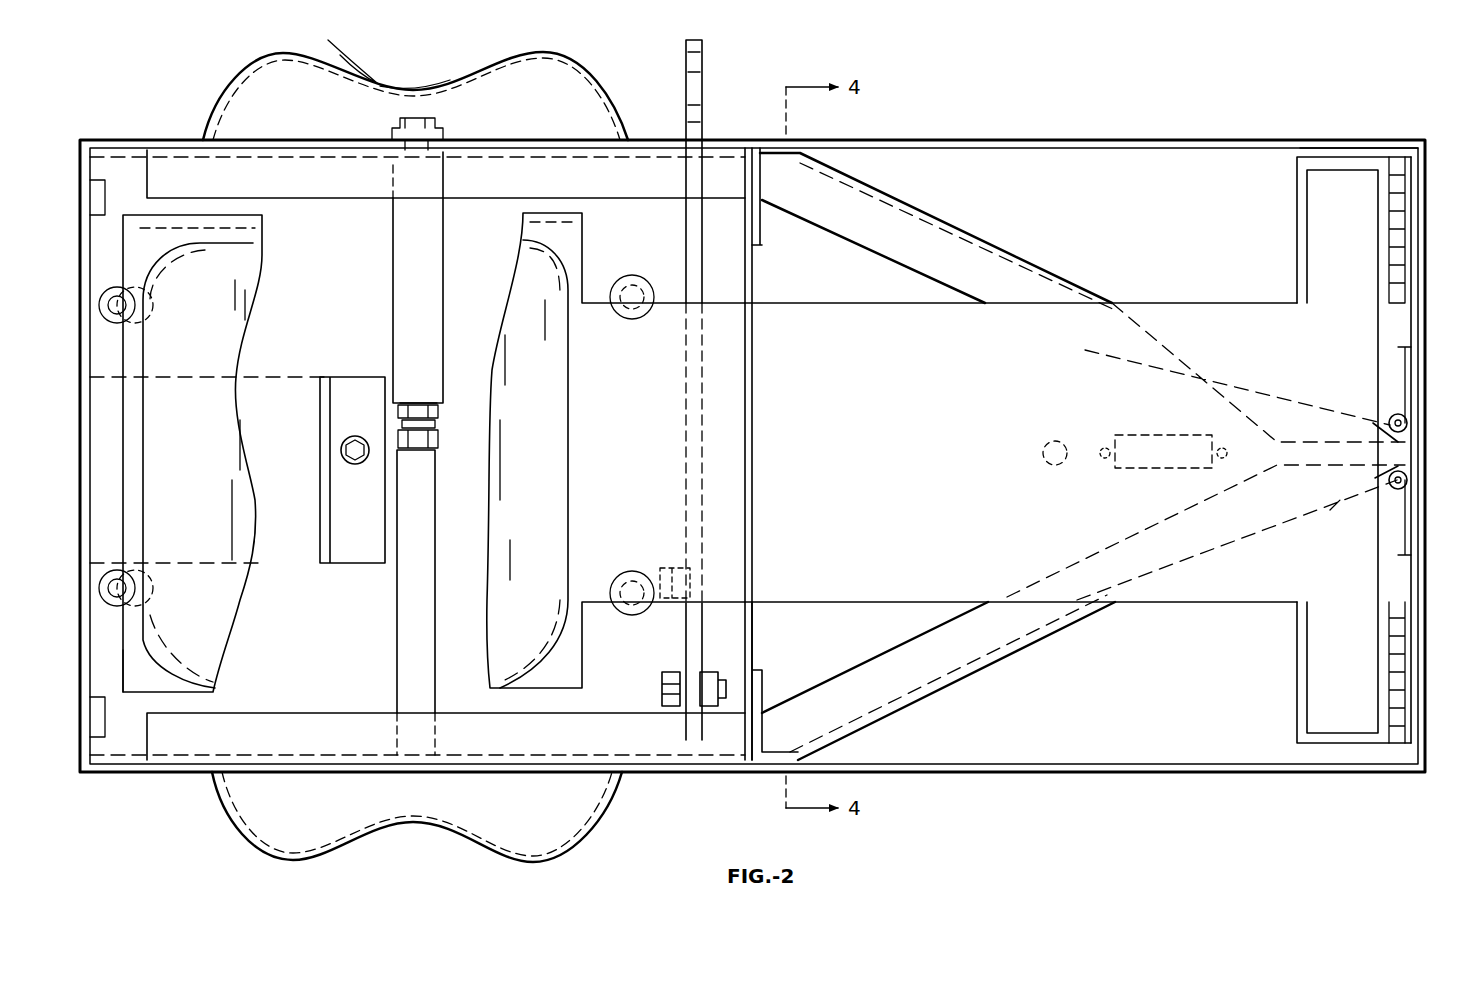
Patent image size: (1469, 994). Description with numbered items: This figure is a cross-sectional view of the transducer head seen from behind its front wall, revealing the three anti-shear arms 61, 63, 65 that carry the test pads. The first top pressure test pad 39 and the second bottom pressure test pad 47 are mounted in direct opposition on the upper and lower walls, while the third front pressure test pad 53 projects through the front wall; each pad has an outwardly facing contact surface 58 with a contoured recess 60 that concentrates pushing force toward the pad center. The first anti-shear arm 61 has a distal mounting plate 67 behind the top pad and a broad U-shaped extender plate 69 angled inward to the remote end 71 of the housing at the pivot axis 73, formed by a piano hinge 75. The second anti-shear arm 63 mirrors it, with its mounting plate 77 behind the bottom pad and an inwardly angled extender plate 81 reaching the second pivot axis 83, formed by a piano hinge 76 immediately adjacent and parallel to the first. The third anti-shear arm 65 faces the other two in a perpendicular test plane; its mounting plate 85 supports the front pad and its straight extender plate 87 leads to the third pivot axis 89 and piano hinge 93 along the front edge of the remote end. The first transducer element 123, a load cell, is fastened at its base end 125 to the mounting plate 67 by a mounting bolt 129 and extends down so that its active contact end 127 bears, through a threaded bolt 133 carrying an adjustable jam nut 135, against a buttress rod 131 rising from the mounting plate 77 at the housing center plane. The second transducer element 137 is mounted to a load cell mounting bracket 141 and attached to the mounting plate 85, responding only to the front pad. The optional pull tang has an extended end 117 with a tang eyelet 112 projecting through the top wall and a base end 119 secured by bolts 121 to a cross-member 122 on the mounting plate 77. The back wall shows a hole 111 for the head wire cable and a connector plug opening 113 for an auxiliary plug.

The first top pressure test pad 39 is at (557, 92).
The second bottom pressure test pad 47 is at (565, 820).
The third front pressure test pad 53 is at (170, 490).
The contact surface 58 is at (342, 49).
The contoured recess 60 is at (466, 72).
The first anti-shear arm 61 is at (912, 192).
The second anti-shear arm 63 is at (932, 705).
The third anti-shear arm 65 is at (865, 292).
The mounting plate 67 is at (636, 278).
The U-shaped extender plate 69 is at (965, 262).
The remote end 71 is at (1430, 275).
The pivot axis 73 is at (1394, 414).
The piano hinge 75 is at (1402, 366).
The piano hinge 76 is at (1405, 543).
The mounting plate 77 is at (228, 730).
The extender plate 81 is at (985, 640).
The second pivot axis 83 is at (1395, 490).
The mounting plate 85 is at (130, 648).
The straight extender plate 87 is at (870, 582).
The third pivot axis 89 is at (1380, 138).
The piano hinge 93 is at (1396, 216).
The hole 111 is at (1050, 442).
The tang eyelet 112 is at (702, 88).
The connector plug opening 113 is at (1145, 460).
The extended end 117 is at (697, 50).
The base end 119 is at (692, 645).
The bolts 121 is at (672, 672).
The cross-member 122 is at (672, 556).
The first transducer element 123 is at (432, 248).
The base end 125 is at (435, 180).
The active contact end 127 is at (424, 388).
The mounting bolt 129 is at (447, 126).
The buttress rod 131 is at (412, 602).
The threaded bolt 133 is at (435, 428).
The adjustable jam nut 135 is at (432, 440).
The second transducer element 137 is at (345, 395).
The load cell mounting bracket 141 is at (298, 540).